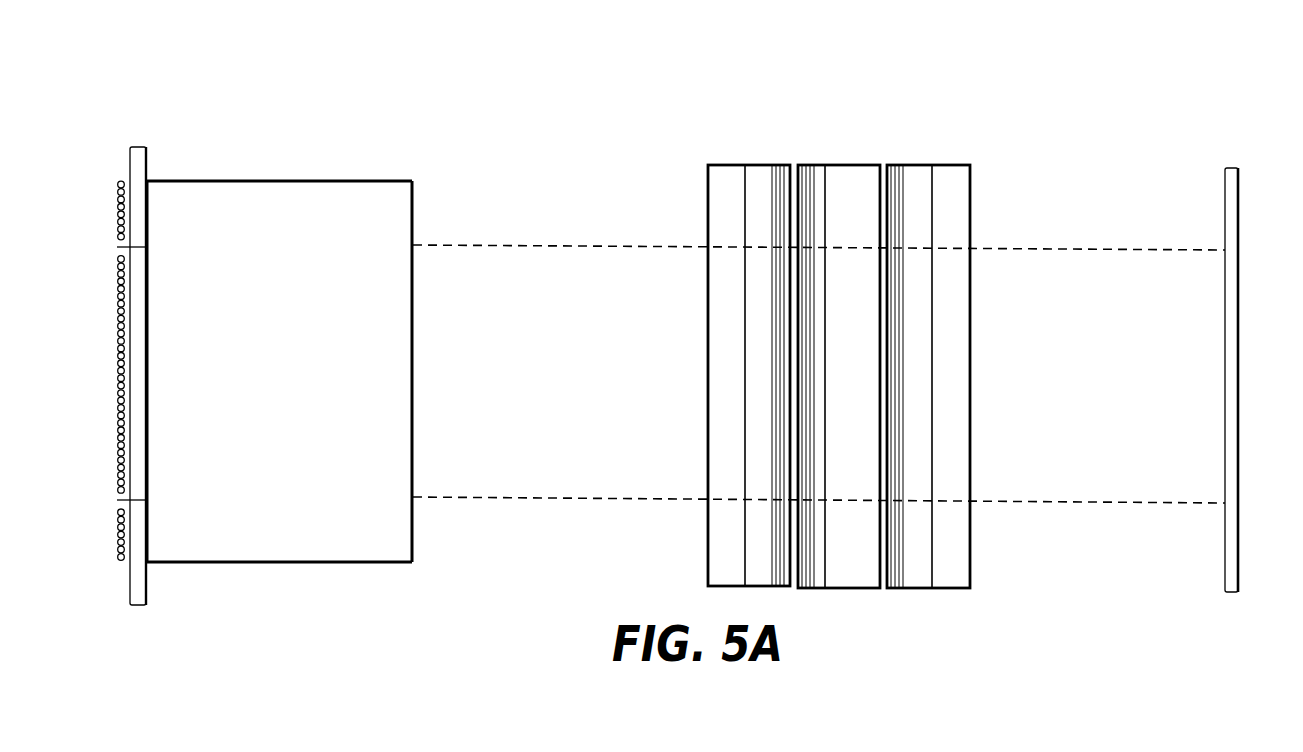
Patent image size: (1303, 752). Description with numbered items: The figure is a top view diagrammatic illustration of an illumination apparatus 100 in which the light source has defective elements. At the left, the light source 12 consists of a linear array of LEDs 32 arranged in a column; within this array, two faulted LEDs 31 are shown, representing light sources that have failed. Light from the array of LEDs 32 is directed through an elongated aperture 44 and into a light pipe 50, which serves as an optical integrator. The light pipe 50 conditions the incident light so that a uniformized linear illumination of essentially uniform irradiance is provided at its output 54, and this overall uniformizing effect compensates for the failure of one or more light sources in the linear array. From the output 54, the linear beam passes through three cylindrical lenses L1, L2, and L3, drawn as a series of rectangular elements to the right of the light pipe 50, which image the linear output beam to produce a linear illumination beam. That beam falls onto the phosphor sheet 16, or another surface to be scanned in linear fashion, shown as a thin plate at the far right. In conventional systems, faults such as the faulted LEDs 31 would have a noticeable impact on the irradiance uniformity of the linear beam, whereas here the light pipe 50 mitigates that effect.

The illumination apparatus 100 is at (1127, 96).
The light source 12 is at (117, 181).
The LEDs 32 is at (117, 221).
The faulted LEDs 31 is at (117, 247).
The elongated aperture 44 is at (148, 552).
The light pipe 50 is at (340, 181).
The output 54 is at (413, 313).
The cylindrical lens L1 is at (762, 165).
The cylindrical lens L2 is at (840, 165).
The cylindrical lens L3 is at (914, 165).
The phosphor sheet 16 is at (1240, 342).